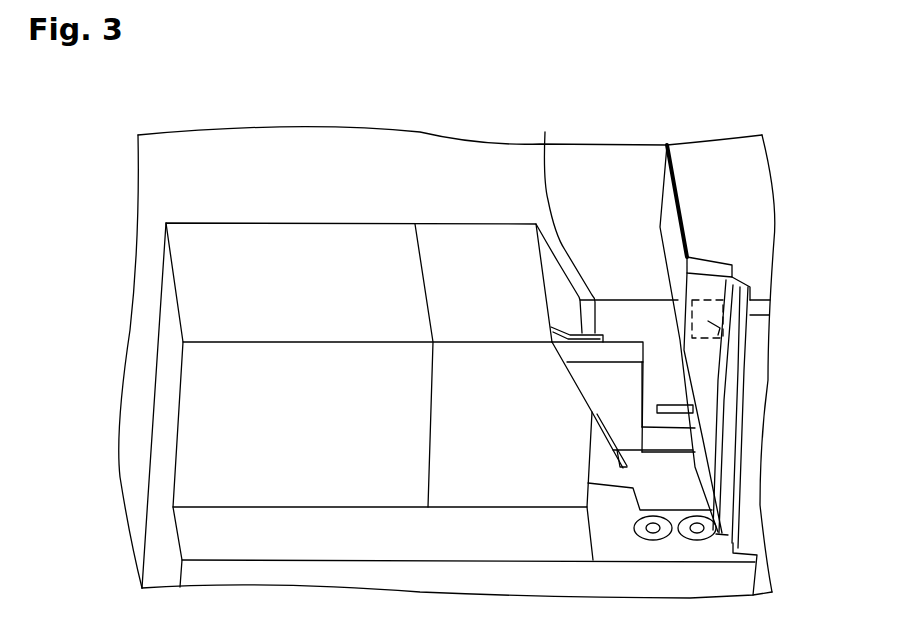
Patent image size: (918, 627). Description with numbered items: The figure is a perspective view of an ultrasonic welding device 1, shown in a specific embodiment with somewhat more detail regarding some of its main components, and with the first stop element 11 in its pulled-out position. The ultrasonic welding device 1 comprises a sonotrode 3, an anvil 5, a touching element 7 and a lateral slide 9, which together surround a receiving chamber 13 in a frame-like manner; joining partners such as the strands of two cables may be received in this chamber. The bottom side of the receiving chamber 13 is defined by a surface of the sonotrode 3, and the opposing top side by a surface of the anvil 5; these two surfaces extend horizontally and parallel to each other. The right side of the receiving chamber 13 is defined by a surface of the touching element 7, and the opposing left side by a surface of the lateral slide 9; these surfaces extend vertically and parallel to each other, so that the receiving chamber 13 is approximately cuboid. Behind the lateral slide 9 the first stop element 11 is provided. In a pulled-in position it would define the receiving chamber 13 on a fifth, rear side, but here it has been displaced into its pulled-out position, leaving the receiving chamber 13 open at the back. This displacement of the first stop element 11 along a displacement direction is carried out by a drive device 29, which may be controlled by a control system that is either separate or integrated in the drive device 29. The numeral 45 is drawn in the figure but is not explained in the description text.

The ultrasonic welding device 1 is at (809, 265).
The sonotrode 3 is at (682, 440).
The anvil 5 is at (726, 323).
The touching element 7 is at (703, 433).
The lateral slide 9 is at (627, 383).
The first stop element 11 is at (546, 132).
The receiving chamber 13 is at (695, 401).
The drive device 29 is at (206, 291).
The gap / insertion direction 45 is at (649, 406).